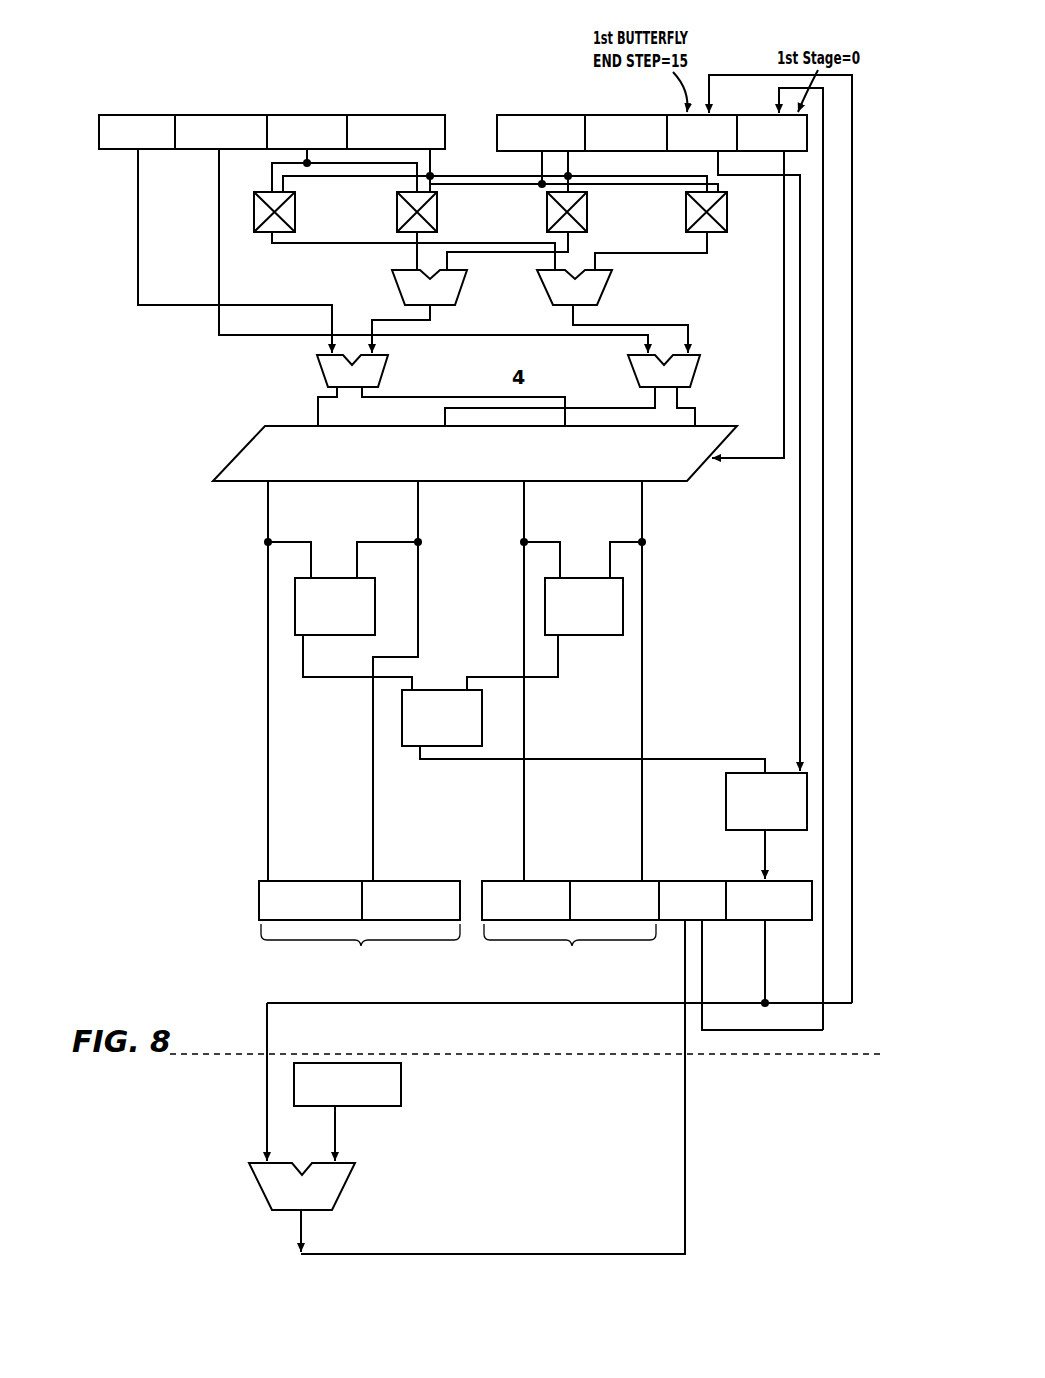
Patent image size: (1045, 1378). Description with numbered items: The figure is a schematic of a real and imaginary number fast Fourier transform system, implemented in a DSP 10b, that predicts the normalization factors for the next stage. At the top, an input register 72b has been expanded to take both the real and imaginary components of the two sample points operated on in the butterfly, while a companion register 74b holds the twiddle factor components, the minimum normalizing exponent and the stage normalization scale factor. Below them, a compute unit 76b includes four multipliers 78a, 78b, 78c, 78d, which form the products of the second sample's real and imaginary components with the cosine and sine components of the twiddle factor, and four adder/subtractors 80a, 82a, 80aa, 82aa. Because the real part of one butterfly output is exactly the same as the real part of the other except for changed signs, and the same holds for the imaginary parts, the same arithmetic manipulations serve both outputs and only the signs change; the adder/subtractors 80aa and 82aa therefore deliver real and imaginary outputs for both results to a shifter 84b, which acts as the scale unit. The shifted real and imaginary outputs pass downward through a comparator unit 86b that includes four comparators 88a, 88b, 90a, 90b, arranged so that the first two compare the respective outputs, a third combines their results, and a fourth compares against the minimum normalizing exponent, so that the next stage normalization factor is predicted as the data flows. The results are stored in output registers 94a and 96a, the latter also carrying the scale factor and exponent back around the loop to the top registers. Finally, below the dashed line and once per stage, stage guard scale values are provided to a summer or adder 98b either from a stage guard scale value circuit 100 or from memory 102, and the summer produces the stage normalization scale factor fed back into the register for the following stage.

The DSP 10b is at (793, 33).
The input register 72b is at (410, 114).
The register 74b is at (533, 114).
The compute unit 76b is at (411, 251).
The multiplier 78a is at (296, 207).
The multiplier 78b is at (438, 206).
The multiplier 78c is at (588, 209).
The multiplier 78d is at (728, 211).
The adder/subtractor 80a is at (460, 282).
The adder/subtractor 82a is at (604, 294).
The adder/subtractor 80aa is at (380, 372).
The adder/subtractor 82aa is at (692, 372).
The shifter 84b is at (232, 457).
The comparator unit 86b is at (449, 516).
The comparator 88a is at (375, 605).
The comparator 88b is at (623, 608).
The comparator 90a is at (482, 716).
The comparator 90b is at (782, 772).
The output register 94a is at (258, 900).
The output register 96a is at (632, 926).
The summer or adder 98b is at (348, 1178).
The stage guard scale value circuit 100 is at (412, 1091).
The memory 102 is at (346, 1062).